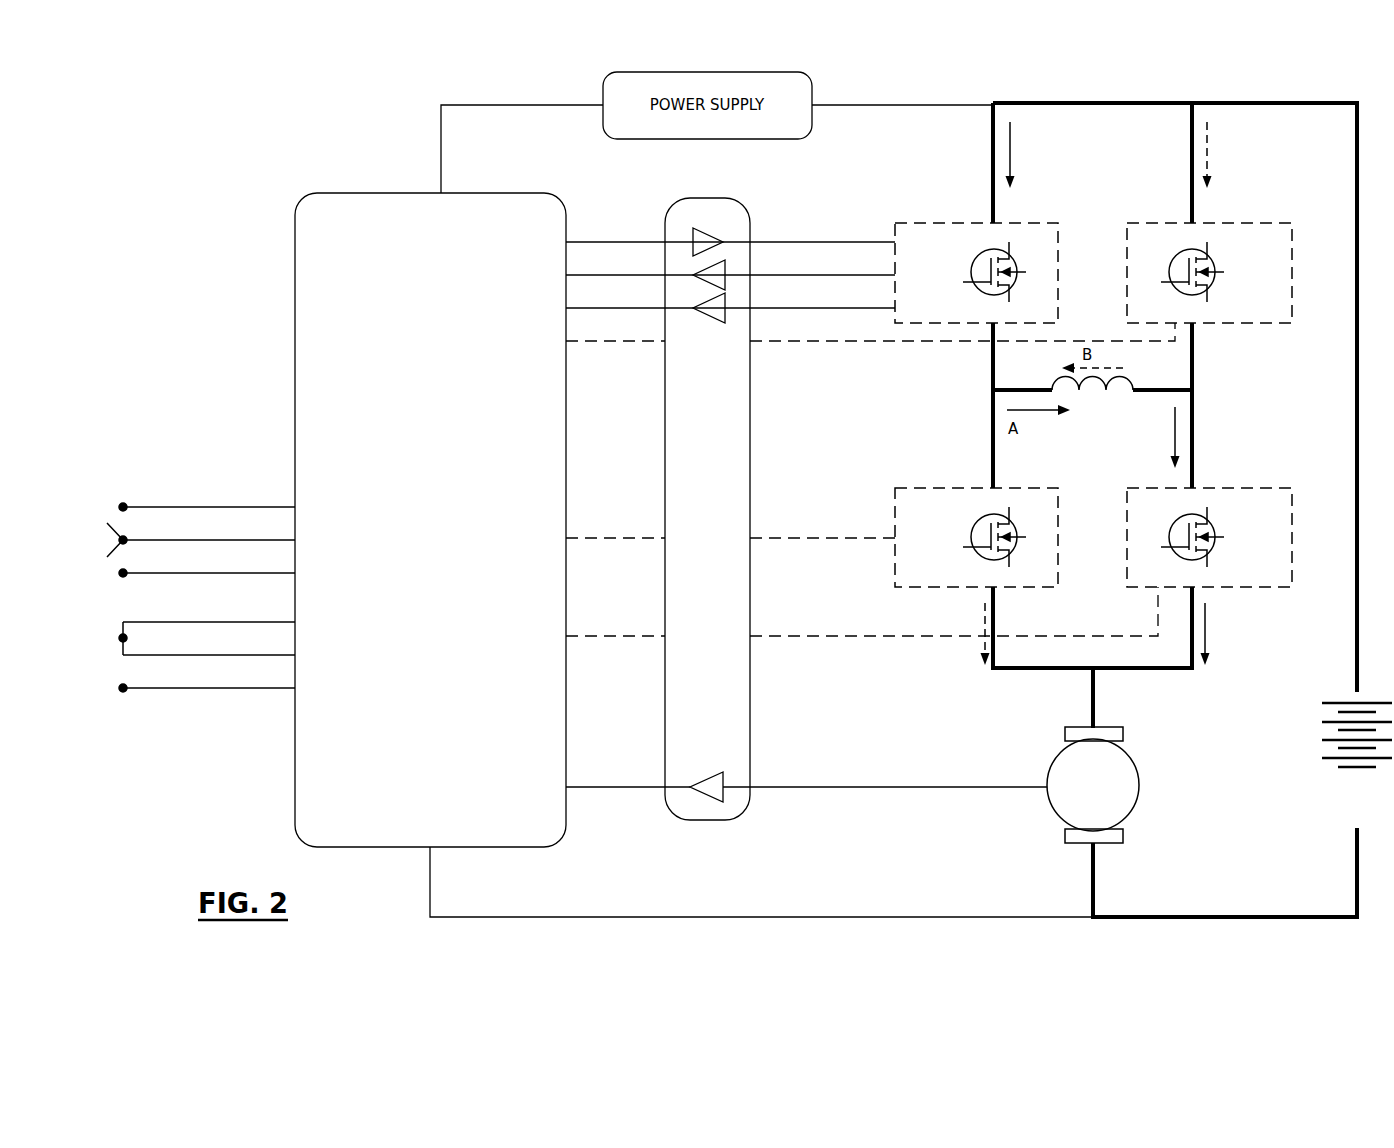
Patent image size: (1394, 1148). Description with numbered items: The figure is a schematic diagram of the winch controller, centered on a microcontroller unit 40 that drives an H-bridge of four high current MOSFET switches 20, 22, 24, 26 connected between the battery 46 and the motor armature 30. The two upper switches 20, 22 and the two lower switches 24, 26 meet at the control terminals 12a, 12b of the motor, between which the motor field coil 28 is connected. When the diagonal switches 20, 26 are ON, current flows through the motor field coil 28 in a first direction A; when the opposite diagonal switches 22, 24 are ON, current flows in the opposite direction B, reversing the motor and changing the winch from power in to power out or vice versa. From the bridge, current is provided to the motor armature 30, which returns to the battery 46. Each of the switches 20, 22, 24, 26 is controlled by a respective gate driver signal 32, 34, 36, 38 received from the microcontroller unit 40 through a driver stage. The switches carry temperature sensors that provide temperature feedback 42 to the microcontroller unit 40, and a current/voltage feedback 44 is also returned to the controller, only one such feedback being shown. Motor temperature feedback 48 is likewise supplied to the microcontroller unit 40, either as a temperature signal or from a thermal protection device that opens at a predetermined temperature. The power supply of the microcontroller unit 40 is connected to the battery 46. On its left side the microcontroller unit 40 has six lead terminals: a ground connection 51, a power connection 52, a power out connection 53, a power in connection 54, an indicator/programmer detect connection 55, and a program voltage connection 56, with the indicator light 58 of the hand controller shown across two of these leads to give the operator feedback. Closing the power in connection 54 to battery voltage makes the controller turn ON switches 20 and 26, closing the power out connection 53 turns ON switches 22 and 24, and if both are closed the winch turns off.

The microcontroller unit 40 is at (302, 197).
The gate driver signal 32 is at (630, 242).
The temperature feedback 42 is at (612, 273).
The current/voltage feedback 44 is at (598, 308).
The gate driver signal 34 is at (793, 345).
The gate driver signal 36 is at (812, 538).
The gate driver signal 38 is at (797, 637).
The motor temperature feedback 48 is at (600, 787).
The MOSFET switch 20 is at (955, 223).
The MOSFET switch 22 is at (1245, 223).
The MOSFET switch 24 is at (955, 488).
The MOSFET switch 26 is at (1245, 488).
The control terminal 12a is at (993, 342).
The control terminal 12b is at (1192, 357).
The motor field coil 28 is at (1090, 390).
The motor armature 30 is at (1135, 810).
The battery 46 is at (1312, 735).
The ground connection 51 is at (238, 655).
The power connection 52 is at (238, 540).
The power "out" connection 53 is at (270, 507).
The power "in" connection 54 is at (270, 573).
The indicator/programmer detect connection 55 is at (188, 622).
The program voltage connection 56 is at (272, 688).
The indicator light 58 is at (123, 638).